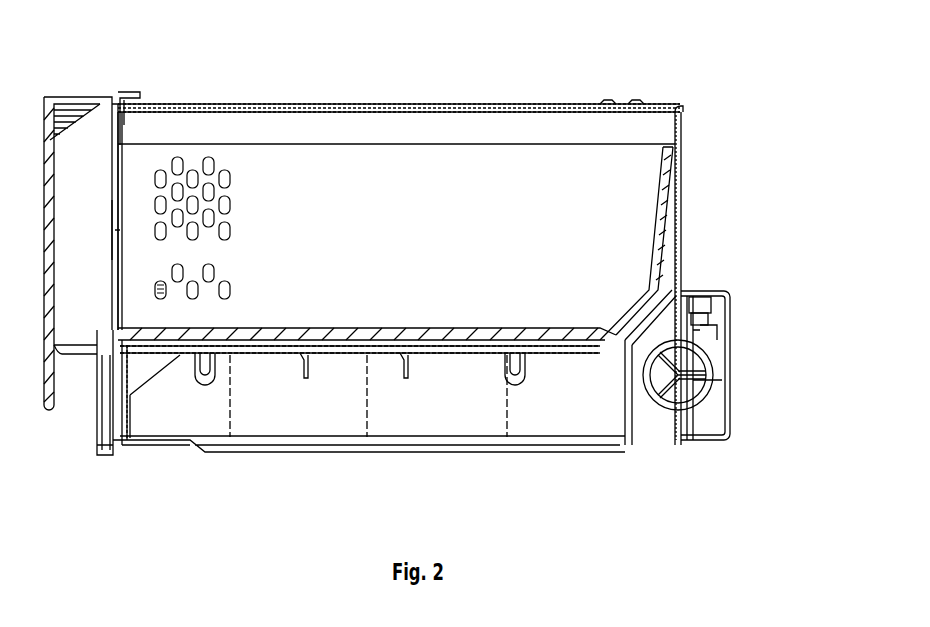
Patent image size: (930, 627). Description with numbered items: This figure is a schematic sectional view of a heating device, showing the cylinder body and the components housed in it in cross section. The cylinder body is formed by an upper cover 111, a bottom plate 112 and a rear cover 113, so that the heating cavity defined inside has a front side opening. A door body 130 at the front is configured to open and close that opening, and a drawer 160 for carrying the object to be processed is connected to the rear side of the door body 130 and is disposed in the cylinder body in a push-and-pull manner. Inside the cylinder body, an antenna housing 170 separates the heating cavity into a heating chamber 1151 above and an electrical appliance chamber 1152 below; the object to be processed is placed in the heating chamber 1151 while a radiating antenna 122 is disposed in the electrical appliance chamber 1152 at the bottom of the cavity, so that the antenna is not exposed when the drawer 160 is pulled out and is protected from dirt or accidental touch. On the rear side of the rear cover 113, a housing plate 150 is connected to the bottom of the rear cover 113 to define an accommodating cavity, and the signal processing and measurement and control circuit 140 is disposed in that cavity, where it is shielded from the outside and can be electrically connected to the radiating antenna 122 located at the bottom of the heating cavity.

The door body 130 is at (80, 92).
The upper cover 111 is at (346, 112).
The drawer 160 is at (540, 170).
The rear cover 113 is at (682, 190).
The heating chamber 1151 is at (661, 255).
The housing plate 150 is at (728, 292).
The signal processing and measurement and control circuit 140 is at (720, 357).
The electrical appliance chamber 1152 is at (168, 412).
The bottom plate 112 is at (302, 455).
The radiating antenna 122 is at (447, 355).
The antenna housing 170 is at (572, 352).